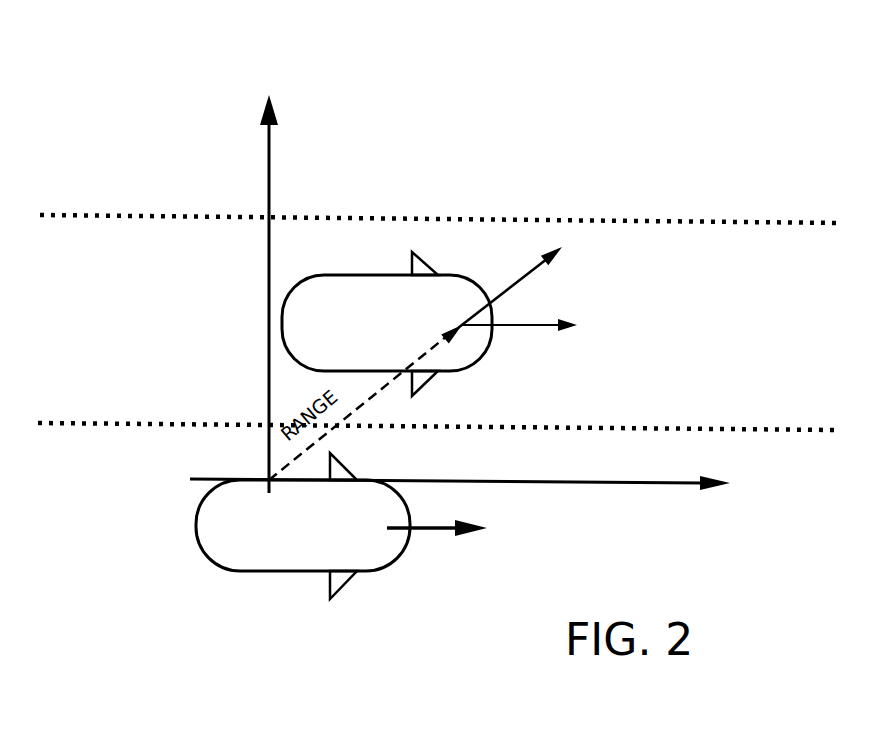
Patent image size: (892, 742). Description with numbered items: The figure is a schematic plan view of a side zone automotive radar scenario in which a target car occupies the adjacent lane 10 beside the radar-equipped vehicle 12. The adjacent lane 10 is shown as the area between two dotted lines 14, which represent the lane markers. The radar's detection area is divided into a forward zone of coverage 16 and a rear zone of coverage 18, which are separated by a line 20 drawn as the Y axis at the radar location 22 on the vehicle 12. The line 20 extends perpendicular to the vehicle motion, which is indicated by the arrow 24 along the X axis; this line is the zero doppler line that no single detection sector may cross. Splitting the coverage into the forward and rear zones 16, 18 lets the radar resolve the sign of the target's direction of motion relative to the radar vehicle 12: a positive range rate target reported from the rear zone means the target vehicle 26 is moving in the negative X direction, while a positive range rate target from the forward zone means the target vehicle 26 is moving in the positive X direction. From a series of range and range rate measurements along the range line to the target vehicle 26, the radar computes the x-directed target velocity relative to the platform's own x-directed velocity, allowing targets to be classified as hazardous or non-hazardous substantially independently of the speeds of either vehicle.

The adjacent lane 10 is at (698, 320).
The vehicle 12 is at (270, 572).
The dotted lines 14 is at (790, 223).
The forward zone of coverage 16 is at (635, 272).
The rear zone of coverage 18 is at (80, 283).
The line 20 is at (268, 176).
The radar location 22 is at (253, 487).
The arrow 24 is at (430, 530).
The target vehicle 26 is at (369, 275).